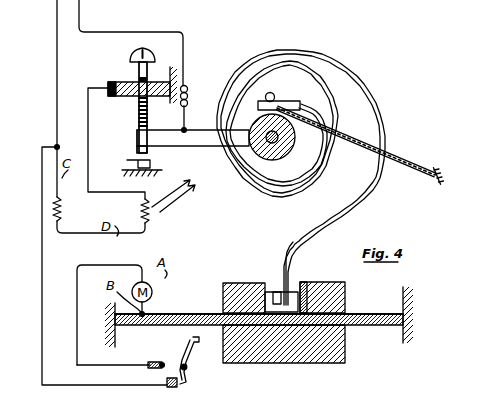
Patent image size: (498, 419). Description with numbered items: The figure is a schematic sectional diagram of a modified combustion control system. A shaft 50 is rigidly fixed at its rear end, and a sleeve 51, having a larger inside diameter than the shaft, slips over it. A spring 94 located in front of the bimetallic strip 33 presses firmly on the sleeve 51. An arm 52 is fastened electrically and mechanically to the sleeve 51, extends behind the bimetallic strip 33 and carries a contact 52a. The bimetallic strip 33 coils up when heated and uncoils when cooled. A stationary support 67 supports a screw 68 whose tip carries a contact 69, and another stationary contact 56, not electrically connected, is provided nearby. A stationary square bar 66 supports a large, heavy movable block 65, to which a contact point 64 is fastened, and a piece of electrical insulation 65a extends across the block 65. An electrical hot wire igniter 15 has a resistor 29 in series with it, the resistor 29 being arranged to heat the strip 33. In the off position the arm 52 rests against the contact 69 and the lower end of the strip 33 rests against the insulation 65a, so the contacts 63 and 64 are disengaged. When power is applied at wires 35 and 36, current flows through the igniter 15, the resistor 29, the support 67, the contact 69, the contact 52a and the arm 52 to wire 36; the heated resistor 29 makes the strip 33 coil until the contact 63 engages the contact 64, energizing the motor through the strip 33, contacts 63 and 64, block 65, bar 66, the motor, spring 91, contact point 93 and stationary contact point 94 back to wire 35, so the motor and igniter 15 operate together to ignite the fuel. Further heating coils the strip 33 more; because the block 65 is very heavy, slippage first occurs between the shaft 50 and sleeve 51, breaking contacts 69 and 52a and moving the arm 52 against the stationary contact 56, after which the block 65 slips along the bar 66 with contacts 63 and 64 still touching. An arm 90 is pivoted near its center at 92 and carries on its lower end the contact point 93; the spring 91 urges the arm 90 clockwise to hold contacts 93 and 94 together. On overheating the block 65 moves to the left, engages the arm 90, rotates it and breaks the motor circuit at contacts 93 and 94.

The wire 35 is at (56, 15).
The wire 36 is at (82, 14).
The screw 68 is at (132, 54).
The stationary support 67 is at (112, 80).
The contact 69 is at (135, 127).
The contact 52a is at (147, 130).
The arm 52 is at (176, 147).
The stationary contact 56 is at (127, 161).
The electrical hot wire igniter 15 is at (65, 212).
The resistor 29 is at (148, 225).
The bimetallic strip 33 is at (366, 81).
The contact 63 is at (274, 246).
The contact point 64 is at (270, 291).
The movable block 65 is at (222, 291).
The piece of electrical insulation 65a is at (300, 282).
The stationary square bar 66 is at (127, 326).
The sleeve 51 is at (283, 155).
The shaft 50 is at (297, 131).
The spring 94 is at (364, 144).
The arm 90 is at (193, 350).
The spring 91 is at (162, 362).
The pivot 92 is at (188, 369).
The contact point 93 is at (177, 383).